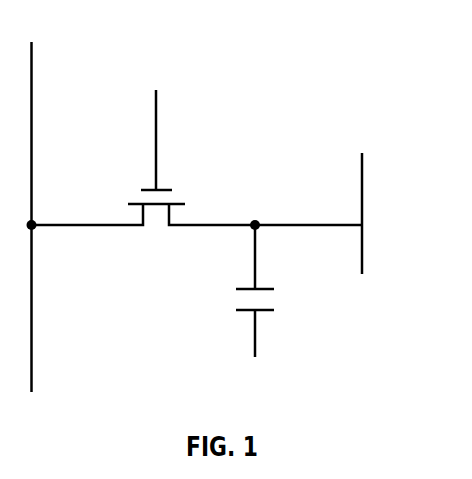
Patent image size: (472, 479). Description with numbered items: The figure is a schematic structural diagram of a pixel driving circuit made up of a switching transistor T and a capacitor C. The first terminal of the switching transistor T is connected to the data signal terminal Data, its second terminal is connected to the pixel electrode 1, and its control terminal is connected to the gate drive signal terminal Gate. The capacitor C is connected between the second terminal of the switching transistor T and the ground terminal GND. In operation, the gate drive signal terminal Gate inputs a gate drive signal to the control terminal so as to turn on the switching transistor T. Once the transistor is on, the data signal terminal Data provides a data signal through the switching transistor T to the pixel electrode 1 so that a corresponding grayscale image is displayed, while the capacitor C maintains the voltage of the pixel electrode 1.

The pixel electrode 1 is at (362, 172).
The switching transistor T is at (197, 231).
The capacitor C is at (240, 267).
The ground terminal GND is at (267, 349).
The data signal terminal Data is at (39, 199).
The gate drive signal terminal Gate is at (154, 125).